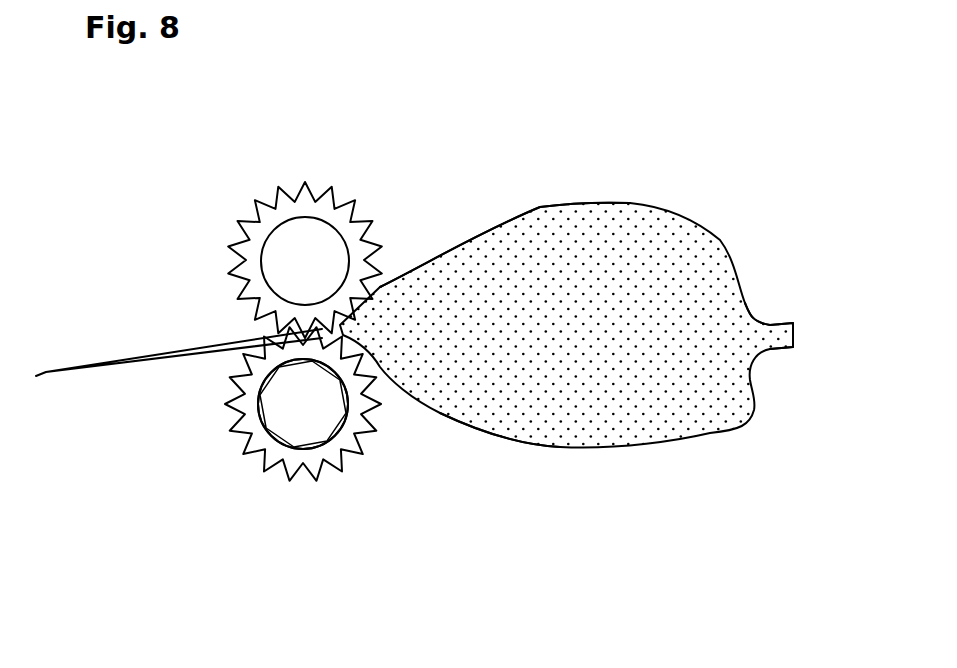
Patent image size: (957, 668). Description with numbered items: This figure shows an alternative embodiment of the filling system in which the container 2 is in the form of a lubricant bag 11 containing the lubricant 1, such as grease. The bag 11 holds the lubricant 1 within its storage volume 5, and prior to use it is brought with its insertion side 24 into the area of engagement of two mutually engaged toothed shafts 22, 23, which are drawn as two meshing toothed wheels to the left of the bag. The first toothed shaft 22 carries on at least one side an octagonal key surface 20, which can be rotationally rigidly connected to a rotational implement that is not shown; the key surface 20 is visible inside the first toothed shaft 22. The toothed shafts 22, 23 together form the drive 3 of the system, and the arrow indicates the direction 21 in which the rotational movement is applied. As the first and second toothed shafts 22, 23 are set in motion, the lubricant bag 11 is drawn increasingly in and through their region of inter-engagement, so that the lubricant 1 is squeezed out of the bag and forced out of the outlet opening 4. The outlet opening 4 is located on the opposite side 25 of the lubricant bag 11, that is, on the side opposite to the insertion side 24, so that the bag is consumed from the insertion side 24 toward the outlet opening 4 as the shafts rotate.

The lubricant 1 is at (582, 327).
The container 2 is at (755, 236).
The plunger 3 is at (240, 499).
The outlet opening 4 is at (797, 334).
The storage volume 5 is at (627, 403).
The lubricant bag 11 is at (530, 214).
The octagonal key surface 20 is at (318, 413).
The direction of rotation 21 is at (335, 503).
The first toothed shaft 22 is at (250, 413).
The second toothed shaft 23 is at (293, 250).
The insertion side 24 is at (35, 372).
The opposite side 25 is at (758, 298).